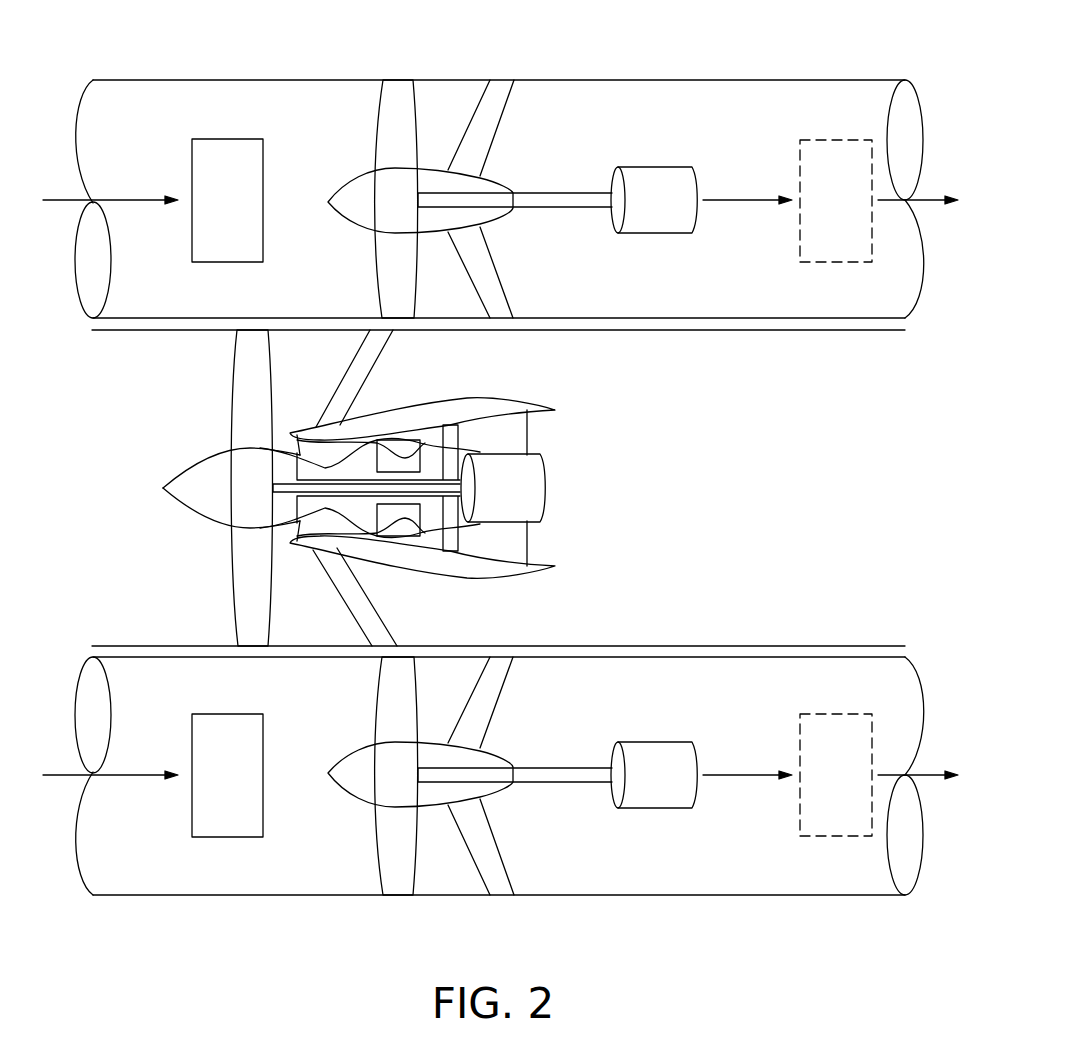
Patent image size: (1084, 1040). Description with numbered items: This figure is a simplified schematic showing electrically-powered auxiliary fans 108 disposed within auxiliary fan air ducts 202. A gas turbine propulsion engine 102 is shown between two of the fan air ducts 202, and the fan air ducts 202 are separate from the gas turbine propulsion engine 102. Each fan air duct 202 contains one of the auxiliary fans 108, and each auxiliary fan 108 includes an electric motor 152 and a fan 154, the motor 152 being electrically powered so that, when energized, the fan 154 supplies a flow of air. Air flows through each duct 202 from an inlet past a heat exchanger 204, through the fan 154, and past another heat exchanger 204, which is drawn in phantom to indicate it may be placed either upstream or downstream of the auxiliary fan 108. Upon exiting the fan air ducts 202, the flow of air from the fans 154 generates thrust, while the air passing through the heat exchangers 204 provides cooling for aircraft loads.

The gas turbine propulsion engine 102 is at (532, 398).
The auxiliary fan 108 is at (589, 93).
The electric motor 152 is at (653, 167).
The fan 154 is at (377, 136).
The auxiliary fan air duct 202 is at (188, 80).
The heat exchanger 204 is at (226, 139).